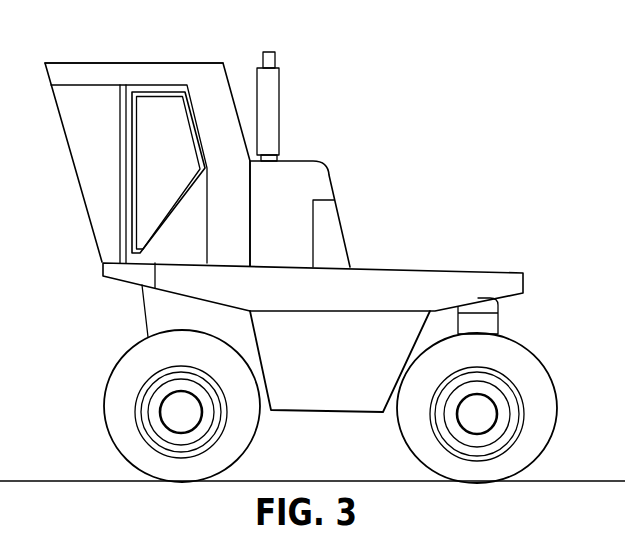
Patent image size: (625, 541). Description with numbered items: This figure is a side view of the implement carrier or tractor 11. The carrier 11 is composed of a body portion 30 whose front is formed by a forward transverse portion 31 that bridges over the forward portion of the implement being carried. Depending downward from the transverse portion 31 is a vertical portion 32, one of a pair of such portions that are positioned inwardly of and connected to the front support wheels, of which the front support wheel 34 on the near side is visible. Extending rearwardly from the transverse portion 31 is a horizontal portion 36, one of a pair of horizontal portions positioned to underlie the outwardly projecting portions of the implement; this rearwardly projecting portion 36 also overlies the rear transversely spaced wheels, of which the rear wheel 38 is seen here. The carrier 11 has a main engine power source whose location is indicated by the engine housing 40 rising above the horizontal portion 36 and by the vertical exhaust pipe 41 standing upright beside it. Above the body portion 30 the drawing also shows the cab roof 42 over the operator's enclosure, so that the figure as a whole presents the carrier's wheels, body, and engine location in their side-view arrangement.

The implement carrier 11 is at (489, 256).
The body portion 30 is at (228, 56).
The forward transverse portion 31 is at (165, 279).
The vertical portion 32 is at (160, 310).
The front support wheel 34 is at (240, 453).
The horizontal portion 36 is at (408, 280).
The rear wheel 38 is at (533, 454).
The engine housing 40 is at (305, 170).
The vertical exhaust pipe 41 is at (272, 101).
The cab roof 42 is at (137, 62).